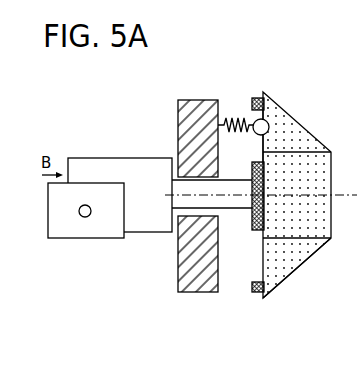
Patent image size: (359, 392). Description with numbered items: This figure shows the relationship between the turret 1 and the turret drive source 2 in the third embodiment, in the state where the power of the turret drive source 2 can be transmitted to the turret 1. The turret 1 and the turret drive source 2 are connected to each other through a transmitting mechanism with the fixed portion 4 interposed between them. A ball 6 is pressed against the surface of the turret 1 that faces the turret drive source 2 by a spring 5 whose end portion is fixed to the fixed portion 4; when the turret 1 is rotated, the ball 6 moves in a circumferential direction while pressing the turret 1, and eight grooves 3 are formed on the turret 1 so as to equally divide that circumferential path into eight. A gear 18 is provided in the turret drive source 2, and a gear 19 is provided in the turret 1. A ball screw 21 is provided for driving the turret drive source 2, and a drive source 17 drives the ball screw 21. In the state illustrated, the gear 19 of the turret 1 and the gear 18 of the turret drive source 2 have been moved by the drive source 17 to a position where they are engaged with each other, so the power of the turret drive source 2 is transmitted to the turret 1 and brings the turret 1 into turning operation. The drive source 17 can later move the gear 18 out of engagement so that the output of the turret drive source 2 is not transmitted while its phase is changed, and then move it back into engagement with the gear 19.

The turret 1 is at (305, 125).
The turret drive source 2 is at (108, 158).
The grooves 3 is at (264, 133).
The fixed portion 4 is at (192, 293).
The spring 5 is at (233, 118).
The ball 6 is at (266, 122).
The drive source 17 is at (68, 240).
The gear 18 is at (257, 232).
The gear 19 is at (258, 292).
The ball screw 21 is at (91, 214).